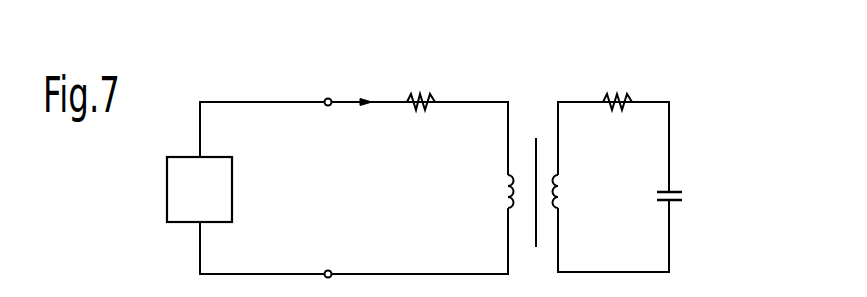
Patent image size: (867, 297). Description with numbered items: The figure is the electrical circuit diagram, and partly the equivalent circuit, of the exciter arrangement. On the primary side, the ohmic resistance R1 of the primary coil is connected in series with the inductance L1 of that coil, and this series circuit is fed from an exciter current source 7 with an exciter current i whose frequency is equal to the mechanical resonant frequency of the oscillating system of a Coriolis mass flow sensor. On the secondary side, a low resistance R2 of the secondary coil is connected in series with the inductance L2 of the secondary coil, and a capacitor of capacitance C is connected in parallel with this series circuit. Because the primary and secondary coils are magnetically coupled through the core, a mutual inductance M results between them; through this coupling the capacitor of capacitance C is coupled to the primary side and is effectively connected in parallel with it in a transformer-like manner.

The exciter current source 7 is at (173, 212).
The exciter current i is at (362, 117).
The ohmic resistance of the primary coil R1 is at (421, 119).
The inductance of the primary coil L1 is at (490, 192).
The mutual inductance M is at (535, 179).
The inductance of the secondary coil L2 is at (575, 192).
The low resistance of the secondary coil R2 is at (617, 120).
The capacitance of the capacitor C is at (658, 195).